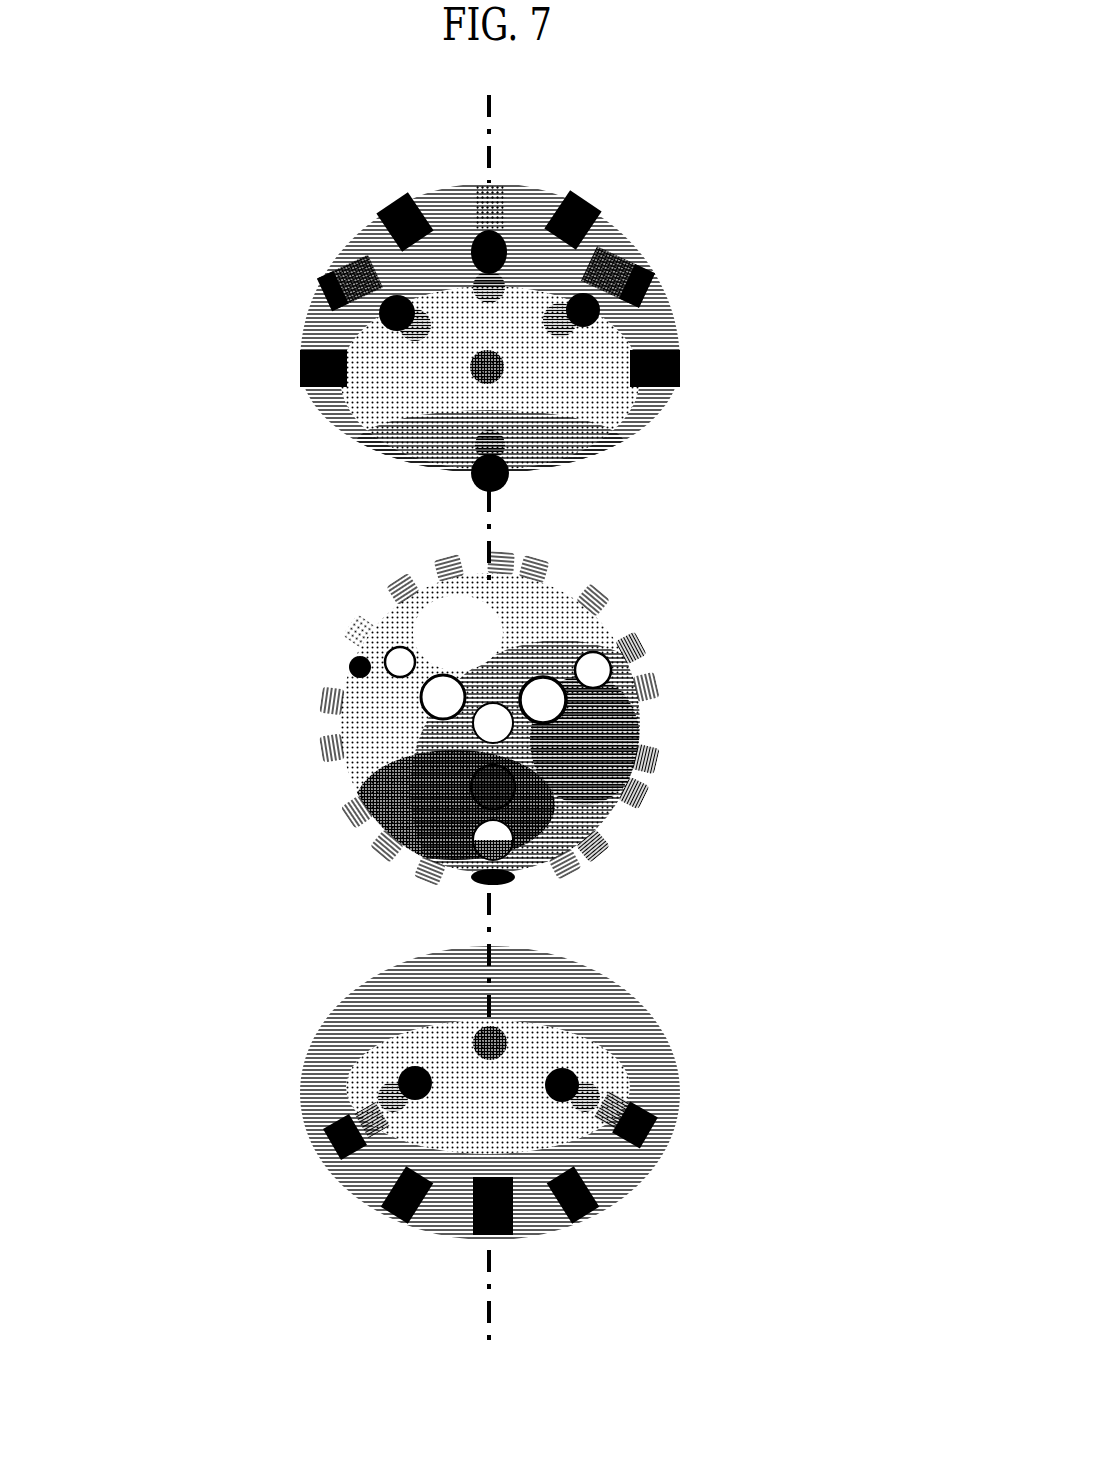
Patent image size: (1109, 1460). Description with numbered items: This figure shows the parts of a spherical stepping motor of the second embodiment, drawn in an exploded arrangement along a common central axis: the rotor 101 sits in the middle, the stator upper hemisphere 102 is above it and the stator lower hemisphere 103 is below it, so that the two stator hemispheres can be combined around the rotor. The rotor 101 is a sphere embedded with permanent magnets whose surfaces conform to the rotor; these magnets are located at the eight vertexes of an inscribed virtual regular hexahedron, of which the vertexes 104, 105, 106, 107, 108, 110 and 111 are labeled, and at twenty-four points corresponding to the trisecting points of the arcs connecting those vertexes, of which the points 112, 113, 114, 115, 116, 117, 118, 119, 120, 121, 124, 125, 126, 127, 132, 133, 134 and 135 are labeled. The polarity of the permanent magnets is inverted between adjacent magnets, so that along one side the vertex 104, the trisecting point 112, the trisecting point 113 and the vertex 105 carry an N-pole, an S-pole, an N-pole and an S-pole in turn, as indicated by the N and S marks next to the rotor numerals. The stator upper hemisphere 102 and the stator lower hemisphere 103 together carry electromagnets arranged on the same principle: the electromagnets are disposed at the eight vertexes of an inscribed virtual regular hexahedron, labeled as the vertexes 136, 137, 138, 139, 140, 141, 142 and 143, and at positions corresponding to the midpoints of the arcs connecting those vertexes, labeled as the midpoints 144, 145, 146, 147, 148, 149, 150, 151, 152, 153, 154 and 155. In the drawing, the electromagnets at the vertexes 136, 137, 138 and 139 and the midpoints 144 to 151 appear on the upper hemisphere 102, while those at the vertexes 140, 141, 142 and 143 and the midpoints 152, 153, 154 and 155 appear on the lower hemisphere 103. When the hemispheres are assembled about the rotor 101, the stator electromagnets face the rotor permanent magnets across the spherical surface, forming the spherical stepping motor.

The rotor 101 is at (580, 810).
The stator upper hemisphere 102 is at (577, 447).
The stator lower hemisphere 103 is at (660, 1083).
The vertex 104 is at (632, 647).
The vertex 105 is at (490, 562).
The vertex 106 is at (352, 652).
The vertex 107 is at (508, 722).
The vertex 108 is at (632, 790).
The vertex 110 is at (357, 812).
The vertex 111 is at (510, 877).
The trisecting point 112 is at (596, 600).
The trisecting point 113 is at (545, 565).
The trisecting point 114 is at (443, 568).
The trisecting point 115 is at (387, 602).
The trisecting point 116 is at (392, 670).
The trisecting point 117 is at (443, 689).
The trisecting point 118 is at (543, 703).
The trisecting point 119 is at (593, 670).
The trisecting point 120 is at (650, 685).
The trisecting point 121 is at (650, 757).
The trisecting point 124 is at (337, 707).
The trisecting point 125 is at (340, 760).
The trisecting point 126 is at (477, 793).
The trisecting point 127 is at (493, 843).
The trisecting point 132 is at (383, 850).
The trisecting point 133 is at (443, 860).
The trisecting point 134 is at (563, 860).
The trisecting point 135 is at (592, 842).
The vertex 136 is at (653, 290).
The vertex 137 is at (490, 183).
The vertex 138 is at (342, 277).
The vertex 139 is at (478, 367).
The vertex 140 is at (650, 1140).
The vertex 141 is at (478, 1034).
The vertex 142 is at (337, 1133).
The vertex 143 is at (475, 1228).
The midpoint 144 is at (573, 198).
The midpoint 145 is at (403, 200).
The midpoint 146 is at (390, 308).
The midpoint 147 is at (587, 323).
The midpoint 148 is at (678, 378).
The midpoint 149 is at (485, 243).
The midpoint 150 is at (300, 358).
The midpoint 151 is at (507, 477).
The midpoint 152 is at (580, 1082).
The midpoint 153 is at (407, 1087).
The midpoint 154 is at (397, 1210).
The midpoint 155 is at (590, 1205).